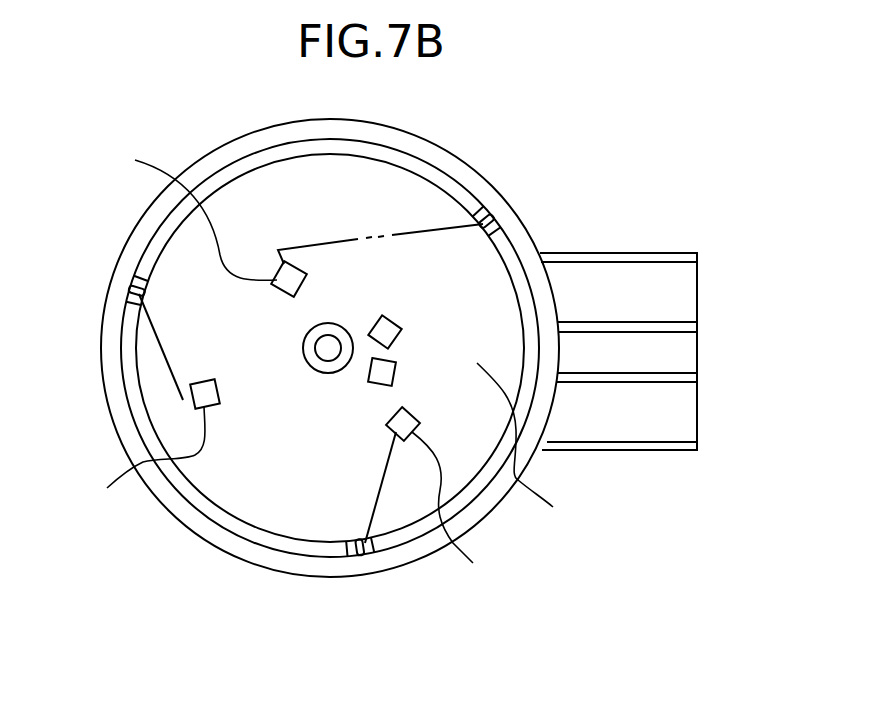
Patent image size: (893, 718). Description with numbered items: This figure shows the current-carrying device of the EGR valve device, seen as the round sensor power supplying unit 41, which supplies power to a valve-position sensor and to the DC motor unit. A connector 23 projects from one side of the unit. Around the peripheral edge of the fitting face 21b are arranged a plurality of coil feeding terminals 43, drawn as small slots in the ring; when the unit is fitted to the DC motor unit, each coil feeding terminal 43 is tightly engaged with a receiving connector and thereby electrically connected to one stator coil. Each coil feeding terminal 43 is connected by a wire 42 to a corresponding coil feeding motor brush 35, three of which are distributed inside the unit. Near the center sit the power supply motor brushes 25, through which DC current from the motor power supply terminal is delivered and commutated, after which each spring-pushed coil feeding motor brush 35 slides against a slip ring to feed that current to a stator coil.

The sensor power supplying unit 41 is at (508, 173).
The connector 23 is at (650, 253).
The coil feeding terminal 43 is at (502, 212).
The wire 42 is at (372, 238).
The power supply motor brush 25 is at (398, 323).
The coil feeding motor brush 35 is at (300, 366).
The fitting face 21b is at (545, 444).